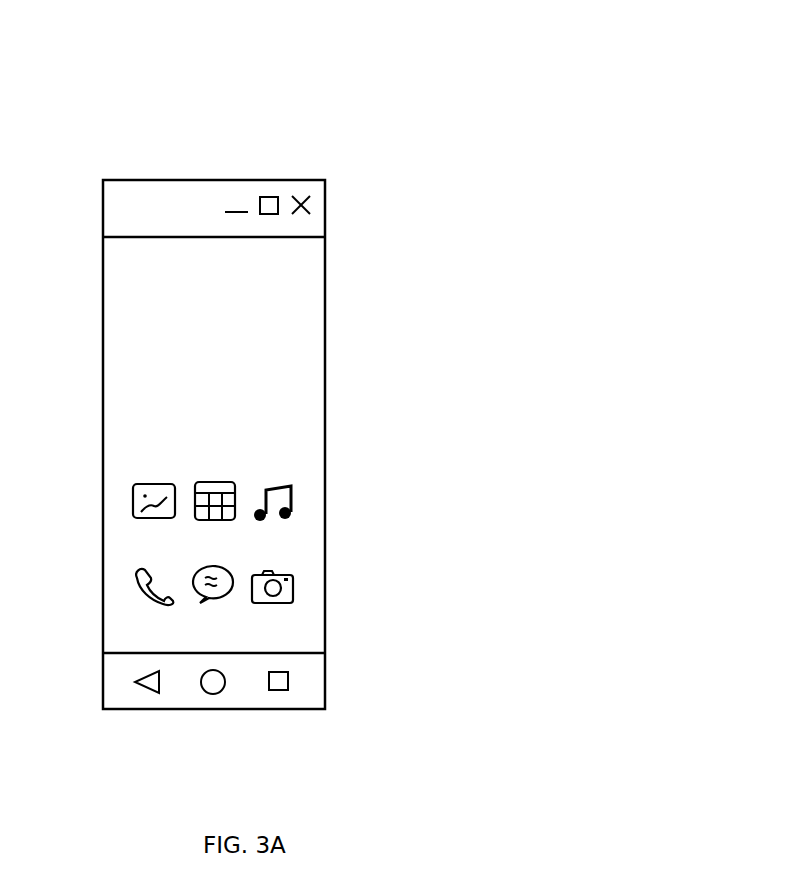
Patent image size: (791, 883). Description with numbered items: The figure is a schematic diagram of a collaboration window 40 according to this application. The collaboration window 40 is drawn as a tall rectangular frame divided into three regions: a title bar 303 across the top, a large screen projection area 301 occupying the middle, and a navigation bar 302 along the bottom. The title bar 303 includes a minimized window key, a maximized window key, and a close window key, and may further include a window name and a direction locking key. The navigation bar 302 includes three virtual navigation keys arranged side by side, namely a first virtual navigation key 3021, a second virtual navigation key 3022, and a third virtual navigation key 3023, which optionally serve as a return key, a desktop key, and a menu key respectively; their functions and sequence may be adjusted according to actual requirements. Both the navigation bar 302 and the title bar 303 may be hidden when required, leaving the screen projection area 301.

The collaboration window 40 is at (333, 114).
The title bar 303 is at (318, 206).
The screen projection area 301 is at (308, 347).
The navigation bar 302 is at (318, 677).
The first virtual navigation key 3021 is at (154, 691).
The second virtual navigation key 3022 is at (213, 688).
The third virtual navigation key 3023 is at (283, 688).